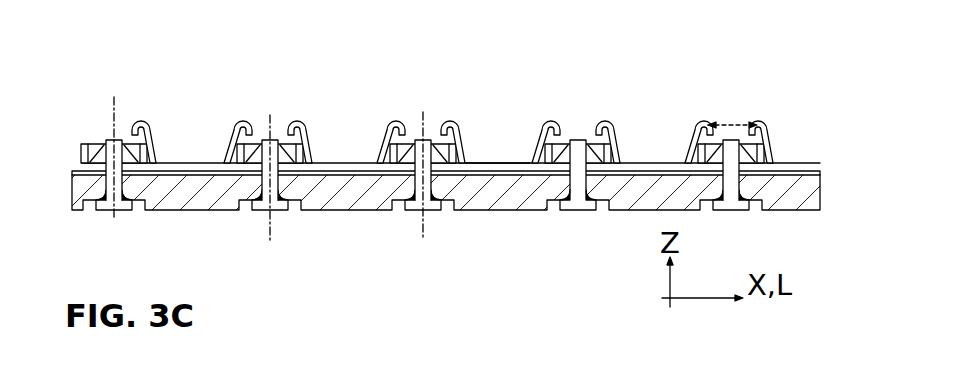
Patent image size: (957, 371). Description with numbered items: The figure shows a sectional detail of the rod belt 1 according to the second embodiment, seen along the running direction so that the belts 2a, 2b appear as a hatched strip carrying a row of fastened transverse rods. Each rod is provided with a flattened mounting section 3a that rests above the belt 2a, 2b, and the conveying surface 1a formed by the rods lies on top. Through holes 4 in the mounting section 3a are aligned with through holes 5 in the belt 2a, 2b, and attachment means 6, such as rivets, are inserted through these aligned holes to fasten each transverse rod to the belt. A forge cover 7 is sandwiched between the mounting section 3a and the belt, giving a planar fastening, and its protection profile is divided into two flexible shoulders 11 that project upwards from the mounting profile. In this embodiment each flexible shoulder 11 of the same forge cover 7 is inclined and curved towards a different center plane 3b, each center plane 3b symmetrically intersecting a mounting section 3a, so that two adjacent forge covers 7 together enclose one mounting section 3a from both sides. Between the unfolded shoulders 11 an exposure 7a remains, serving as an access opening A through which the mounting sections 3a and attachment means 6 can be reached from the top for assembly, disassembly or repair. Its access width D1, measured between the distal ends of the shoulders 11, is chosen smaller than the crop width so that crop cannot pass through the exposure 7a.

The rod belt 1 is at (434, 133).
The conveying surface 1a is at (485, 126).
The belt 2a is at (435, 218).
The belt 2b is at (493, 200).
The mounting section 3a is at (82, 156).
The center plane 3b is at (110, 122).
The through hole 4 is at (257, 152).
The through hole 5 is at (127, 190).
The attachment means 6 is at (103, 195).
The forge cover 7 is at (188, 161).
The exposure 7a is at (582, 119).
The access opening A is at (601, 117).
The flexible shoulder 11 is at (143, 124).
The access width D1 is at (733, 125).